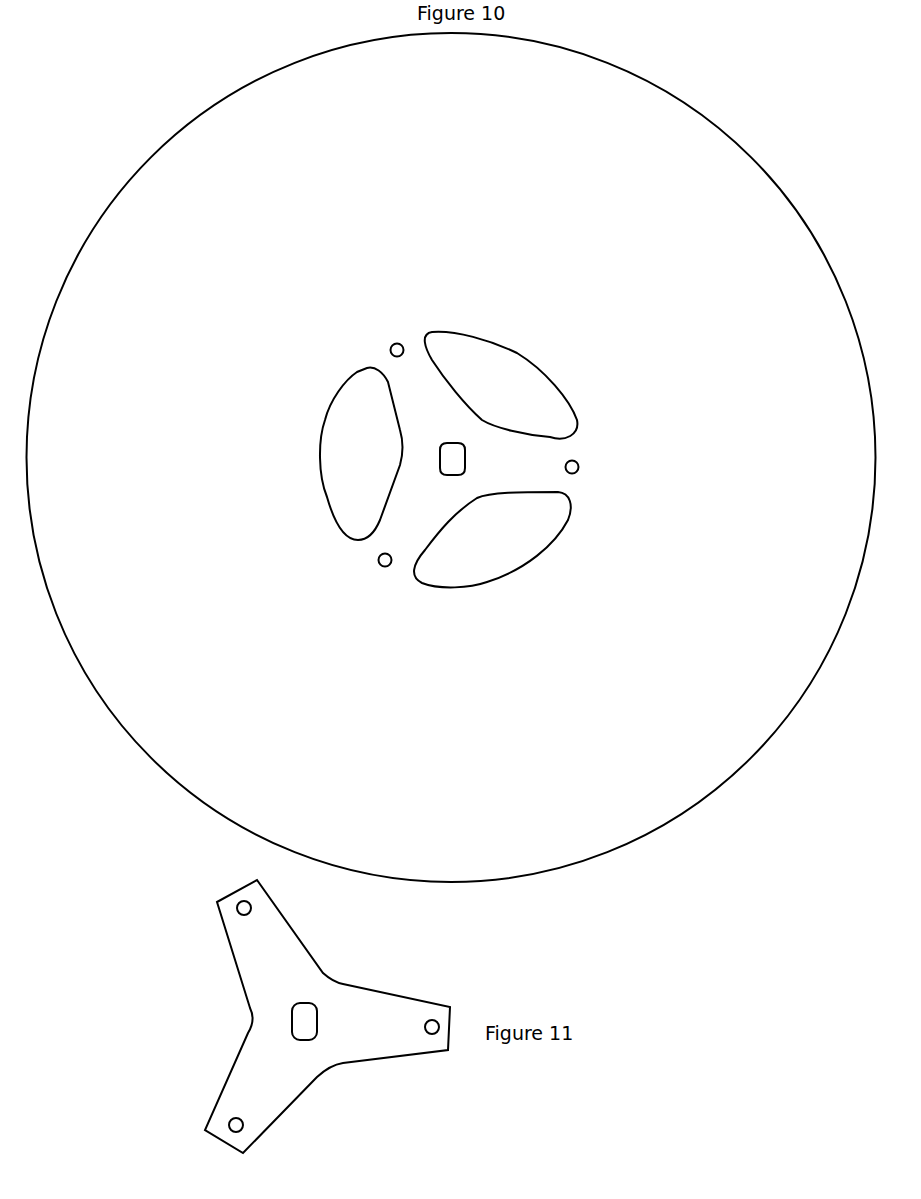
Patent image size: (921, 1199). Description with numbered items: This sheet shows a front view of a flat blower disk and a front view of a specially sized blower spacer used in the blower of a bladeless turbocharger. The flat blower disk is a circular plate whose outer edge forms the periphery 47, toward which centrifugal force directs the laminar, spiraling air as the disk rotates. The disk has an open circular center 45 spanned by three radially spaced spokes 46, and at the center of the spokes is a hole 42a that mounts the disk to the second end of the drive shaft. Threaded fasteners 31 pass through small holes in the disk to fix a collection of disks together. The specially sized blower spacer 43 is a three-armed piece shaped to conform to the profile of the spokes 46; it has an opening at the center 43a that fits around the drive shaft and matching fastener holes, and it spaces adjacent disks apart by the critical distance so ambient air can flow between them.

In FIG. 10, the periphery 47 is at (97, 222).
In FIG. 10, the threaded fastener 31 is at (394, 343).
In FIG. 10, the spoke 46 is at (505, 447).
In FIG. 10, the open circular center 45 is at (518, 538).
In FIG. 10, the hole 42a is at (448, 467).
In FIG. 11, the specially sized blower spacer 43 is at (377, 1045).
In FIG. 11, the opening at the center 43a is at (298, 1020).